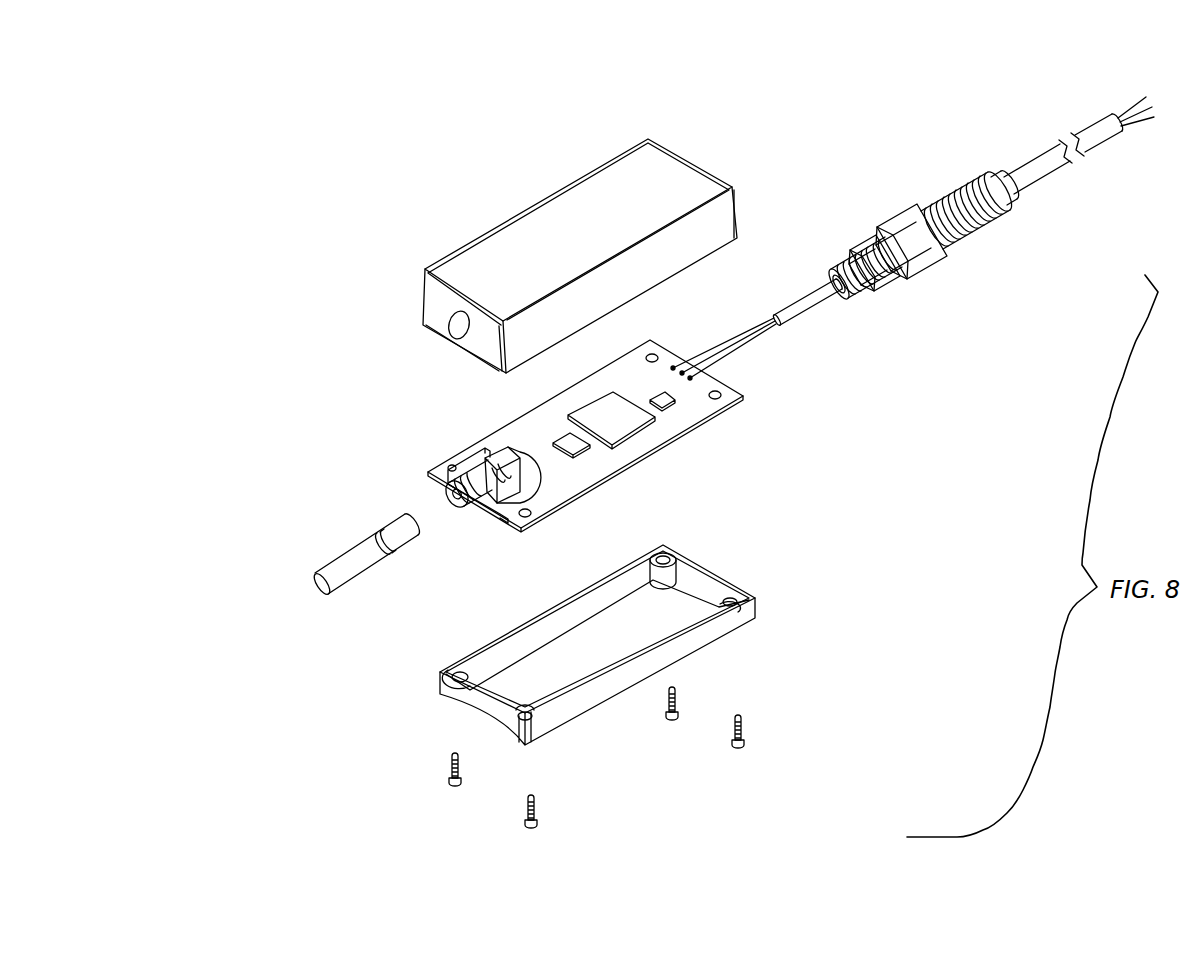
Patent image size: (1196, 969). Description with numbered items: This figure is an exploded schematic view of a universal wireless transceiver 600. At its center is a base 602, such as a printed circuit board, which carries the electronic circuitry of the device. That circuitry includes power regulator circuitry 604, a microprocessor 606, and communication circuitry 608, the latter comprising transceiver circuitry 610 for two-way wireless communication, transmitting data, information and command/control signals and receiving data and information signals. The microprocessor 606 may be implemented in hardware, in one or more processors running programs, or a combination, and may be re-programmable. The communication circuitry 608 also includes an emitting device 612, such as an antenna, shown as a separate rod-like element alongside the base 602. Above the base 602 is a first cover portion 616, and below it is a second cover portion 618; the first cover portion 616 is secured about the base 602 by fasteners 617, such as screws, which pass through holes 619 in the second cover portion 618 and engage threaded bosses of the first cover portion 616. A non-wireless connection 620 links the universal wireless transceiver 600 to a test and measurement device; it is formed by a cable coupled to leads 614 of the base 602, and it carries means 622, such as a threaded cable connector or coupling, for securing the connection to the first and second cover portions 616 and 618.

The universal wireless transceiver 600 is at (253, 664).
The base 602 is at (557, 508).
The power regulator circuitry 604 is at (678, 408).
The microprocessor 606 is at (642, 437).
The communication circuitry 608 is at (513, 434).
The transceiver circuitry 610 is at (583, 453).
The emitting device 612 is at (367, 540).
The leads 614 is at (675, 363).
The first cover portion 616 is at (507, 230).
The fasteners 617 is at (472, 826).
The second cover portion 618 is at (705, 633).
The holes 619 is at (453, 668).
The non-wireless connection 620 is at (1033, 167).
The means for securing 622 is at (927, 275).